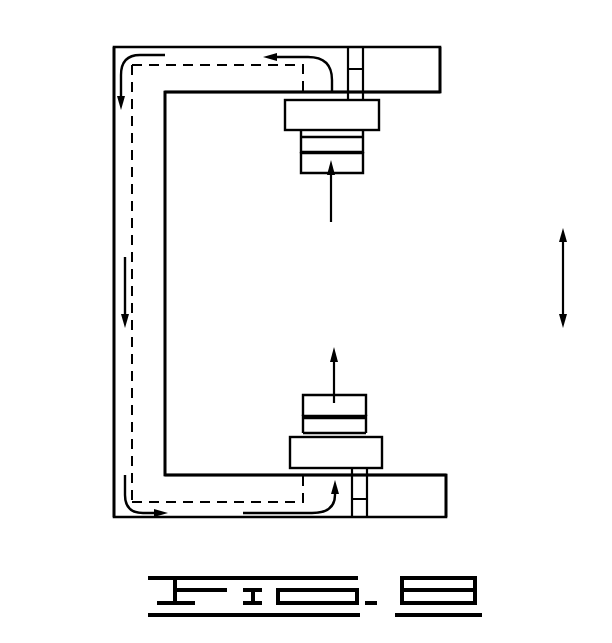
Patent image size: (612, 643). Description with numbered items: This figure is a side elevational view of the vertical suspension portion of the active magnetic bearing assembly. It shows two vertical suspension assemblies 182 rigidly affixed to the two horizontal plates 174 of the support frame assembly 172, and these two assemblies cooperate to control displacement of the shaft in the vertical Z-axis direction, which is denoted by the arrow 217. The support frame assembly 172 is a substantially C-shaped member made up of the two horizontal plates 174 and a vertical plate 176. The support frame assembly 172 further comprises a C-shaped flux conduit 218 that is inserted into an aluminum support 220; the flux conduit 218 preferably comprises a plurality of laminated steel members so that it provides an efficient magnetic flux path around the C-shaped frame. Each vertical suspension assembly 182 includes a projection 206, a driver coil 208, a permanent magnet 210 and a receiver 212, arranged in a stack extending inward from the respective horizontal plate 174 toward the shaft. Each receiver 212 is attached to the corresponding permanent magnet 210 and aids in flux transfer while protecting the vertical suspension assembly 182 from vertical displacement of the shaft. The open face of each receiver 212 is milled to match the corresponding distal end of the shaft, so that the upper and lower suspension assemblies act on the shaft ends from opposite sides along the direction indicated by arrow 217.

The support frame assembly 172 is at (96, 265).
The horizontal plates 174 is at (433, 62).
The vertical plate 176 is at (119, 155).
The vertical suspension assembly 182 is at (288, 163).
The projections 206 is at (348, 47).
The driver coils 208 is at (365, 117).
The permanent magnets 210 is at (350, 143).
The receivers 212 is at (353, 163).
The arrow 217 is at (562, 280).
The C-shaped flux conduit 218 is at (127, 447).
The aluminum support 220 is at (148, 348).